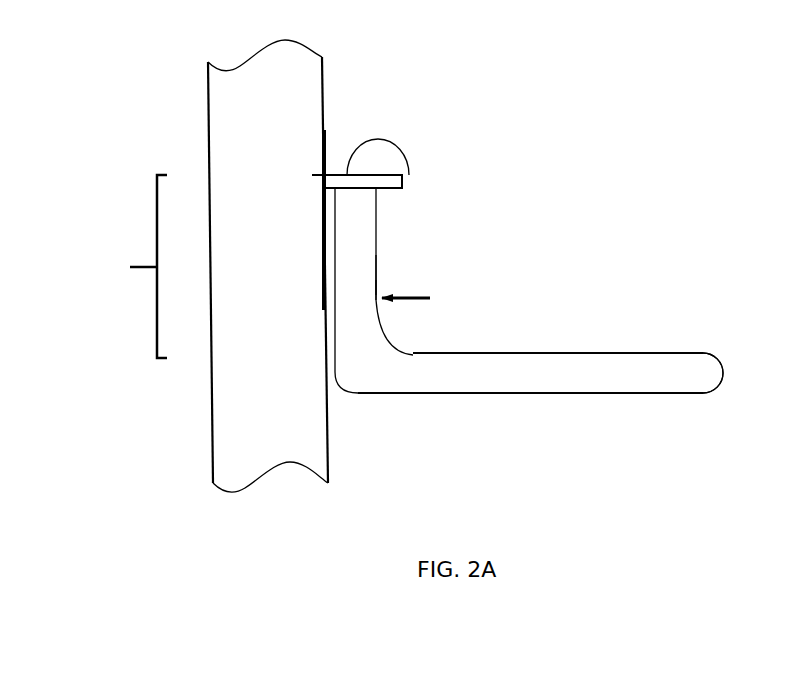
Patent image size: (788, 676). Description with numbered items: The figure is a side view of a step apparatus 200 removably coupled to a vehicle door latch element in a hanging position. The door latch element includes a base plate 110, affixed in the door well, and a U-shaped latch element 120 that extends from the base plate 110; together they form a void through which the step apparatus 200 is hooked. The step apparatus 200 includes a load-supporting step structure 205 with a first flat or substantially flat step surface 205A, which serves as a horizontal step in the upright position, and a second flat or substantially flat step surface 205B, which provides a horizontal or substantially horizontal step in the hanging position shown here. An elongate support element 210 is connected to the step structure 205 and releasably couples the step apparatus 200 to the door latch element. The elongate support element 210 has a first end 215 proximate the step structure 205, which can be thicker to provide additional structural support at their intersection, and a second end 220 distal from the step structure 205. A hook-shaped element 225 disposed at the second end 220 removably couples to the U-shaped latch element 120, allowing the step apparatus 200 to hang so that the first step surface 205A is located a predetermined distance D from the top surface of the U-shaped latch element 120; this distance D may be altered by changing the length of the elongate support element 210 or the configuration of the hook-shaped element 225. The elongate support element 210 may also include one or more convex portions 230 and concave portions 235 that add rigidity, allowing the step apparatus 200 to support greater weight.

The base plate 110 is at (320, 176).
The U-shaped latch element 120 is at (390, 193).
The step apparatus 200 is at (634, 272).
The load-supporting step structure 205 is at (718, 384).
The first step surface 205A is at (582, 391).
The second step surface 205B is at (629, 351).
The elongate support element 210 is at (434, 300).
The first end 215 is at (361, 343).
The second end 220 is at (391, 137).
The hook-shaped element 225 is at (416, 172).
The convex portion 230 is at (373, 268).
The concave portion 235 is at (379, 287).
The predetermined distance D is at (133, 266).